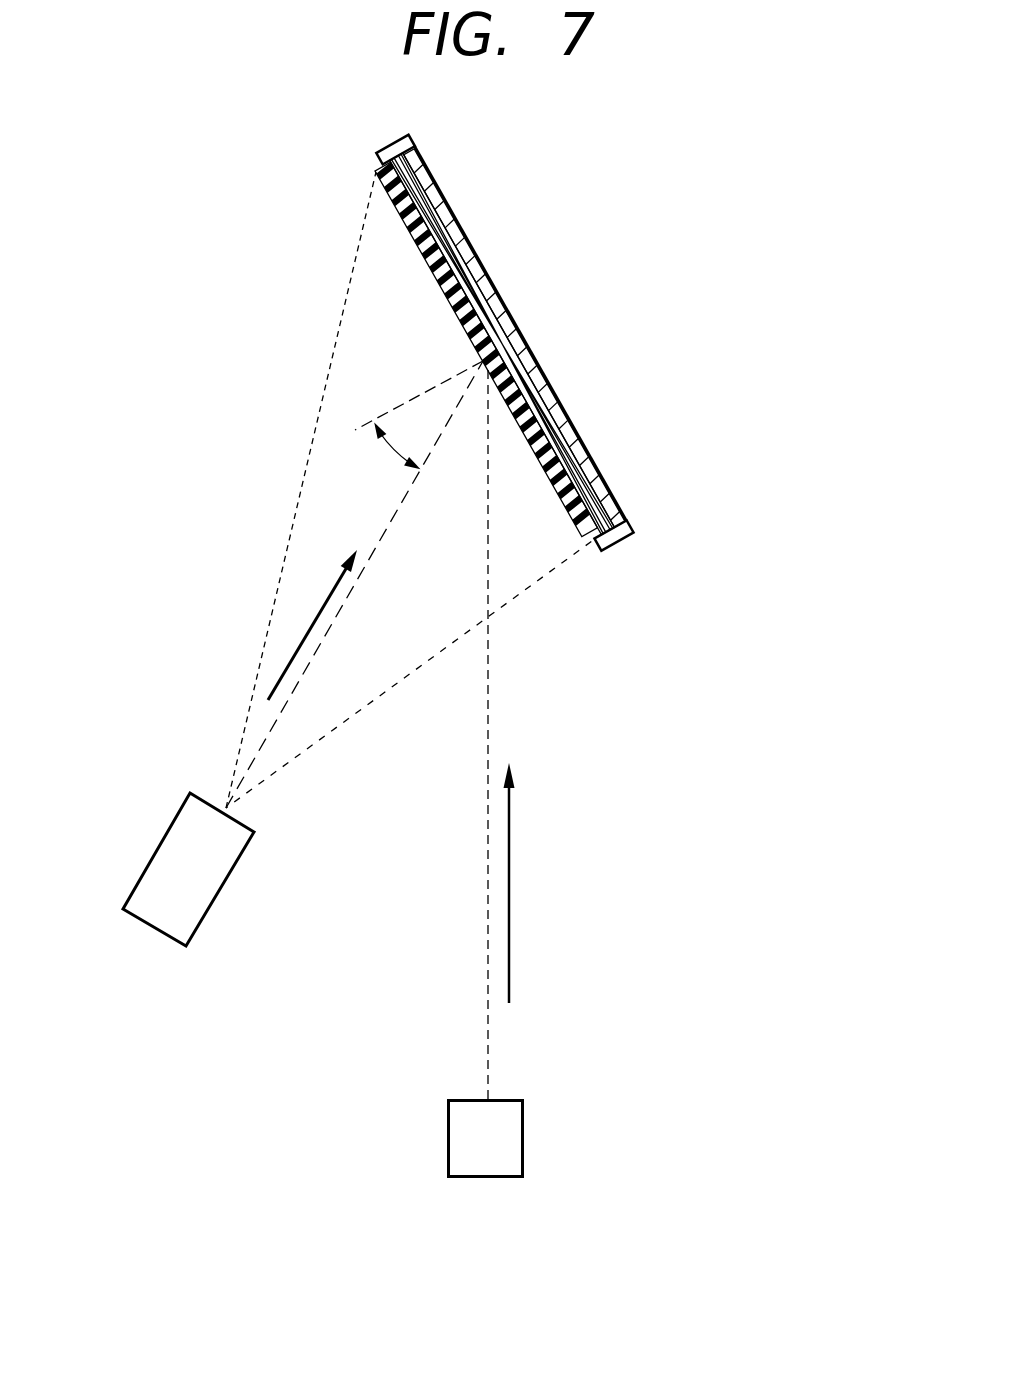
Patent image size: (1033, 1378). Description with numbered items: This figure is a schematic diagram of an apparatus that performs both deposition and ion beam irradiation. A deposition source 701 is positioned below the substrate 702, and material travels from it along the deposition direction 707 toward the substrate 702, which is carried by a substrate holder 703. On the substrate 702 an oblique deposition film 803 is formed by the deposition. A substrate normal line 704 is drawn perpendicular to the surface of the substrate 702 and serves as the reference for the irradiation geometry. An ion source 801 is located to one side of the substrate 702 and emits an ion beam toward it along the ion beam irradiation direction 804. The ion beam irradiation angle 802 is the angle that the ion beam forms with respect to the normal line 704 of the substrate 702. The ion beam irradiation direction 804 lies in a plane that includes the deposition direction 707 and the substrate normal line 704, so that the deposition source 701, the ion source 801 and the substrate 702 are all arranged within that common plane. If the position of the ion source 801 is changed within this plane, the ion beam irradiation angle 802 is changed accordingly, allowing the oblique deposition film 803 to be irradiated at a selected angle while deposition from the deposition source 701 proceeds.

The deposition source 701 is at (483, 1177).
The substrate 702 is at (498, 300).
The substrate holder 703 is at (618, 548).
The substrate normal line 704 is at (398, 405).
The deposition direction 707 is at (510, 899).
The ion source 801 is at (160, 923).
The ion beam irradiation angle 802 is at (380, 451).
The oblique deposition film 803 is at (577, 448).
The ion beam irradiation direction 804 is at (313, 618).